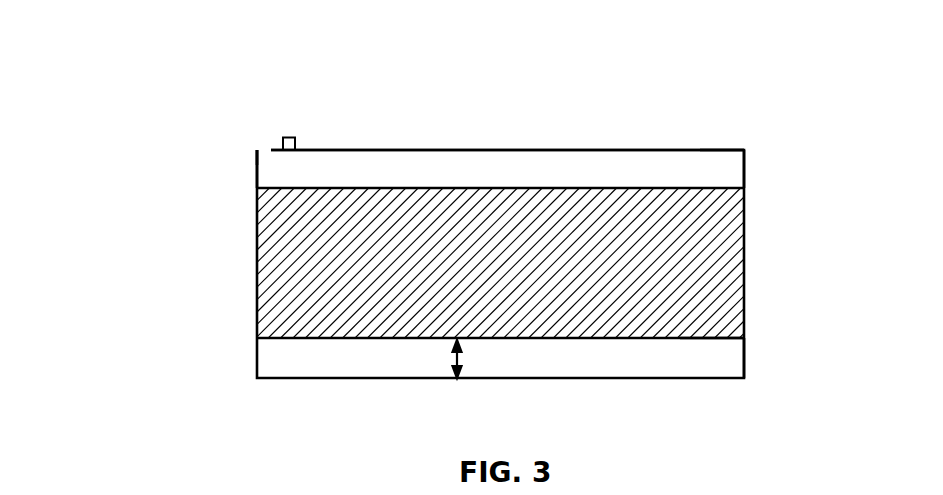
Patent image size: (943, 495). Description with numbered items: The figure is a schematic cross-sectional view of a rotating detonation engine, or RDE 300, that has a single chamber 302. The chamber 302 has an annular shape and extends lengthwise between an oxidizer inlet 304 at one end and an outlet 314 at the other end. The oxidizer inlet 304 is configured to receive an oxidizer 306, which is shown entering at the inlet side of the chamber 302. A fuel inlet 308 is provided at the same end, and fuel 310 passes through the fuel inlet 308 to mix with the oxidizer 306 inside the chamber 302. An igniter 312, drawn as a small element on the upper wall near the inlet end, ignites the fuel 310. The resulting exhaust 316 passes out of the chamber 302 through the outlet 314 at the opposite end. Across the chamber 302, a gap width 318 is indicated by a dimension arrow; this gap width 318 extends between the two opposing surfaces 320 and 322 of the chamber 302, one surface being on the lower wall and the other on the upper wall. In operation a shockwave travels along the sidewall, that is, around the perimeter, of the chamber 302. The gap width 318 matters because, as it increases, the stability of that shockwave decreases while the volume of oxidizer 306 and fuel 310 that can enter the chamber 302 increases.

The RDE 300 is at (124, 85).
The chamber 302 is at (499, 178).
The oxidizer inlet 304 is at (244, 342).
The oxidizer 306 is at (227, 172).
The fuel inlet 308 is at (250, 141).
The fuel 310 is at (262, 137).
The igniter 312 is at (295, 145).
The outlet 314 is at (744, 171).
The exhaust 316 is at (748, 361).
The gap width 318 is at (458, 359).
The opposing surface 320 is at (705, 351).
The opposing surface 322 is at (731, 163).